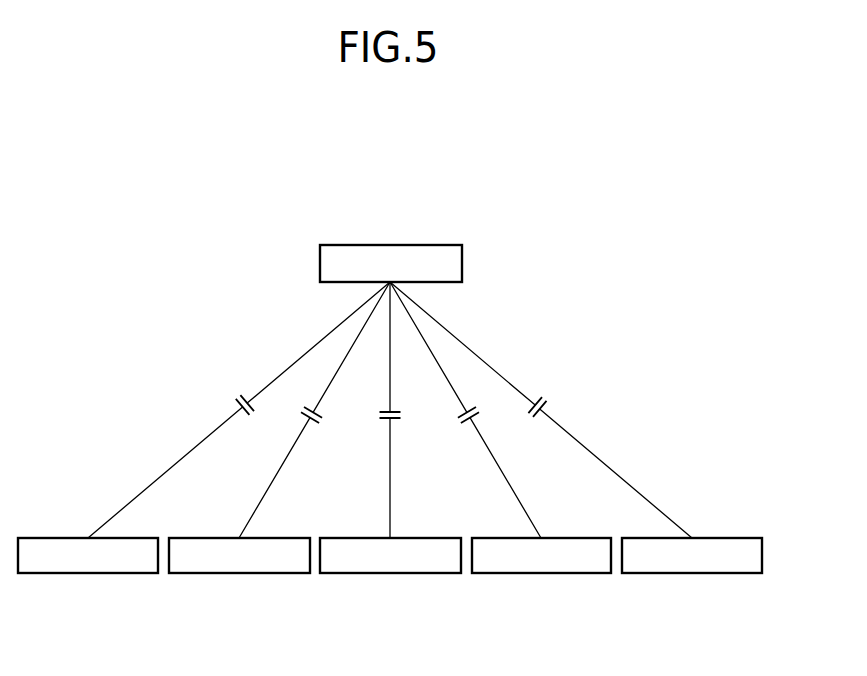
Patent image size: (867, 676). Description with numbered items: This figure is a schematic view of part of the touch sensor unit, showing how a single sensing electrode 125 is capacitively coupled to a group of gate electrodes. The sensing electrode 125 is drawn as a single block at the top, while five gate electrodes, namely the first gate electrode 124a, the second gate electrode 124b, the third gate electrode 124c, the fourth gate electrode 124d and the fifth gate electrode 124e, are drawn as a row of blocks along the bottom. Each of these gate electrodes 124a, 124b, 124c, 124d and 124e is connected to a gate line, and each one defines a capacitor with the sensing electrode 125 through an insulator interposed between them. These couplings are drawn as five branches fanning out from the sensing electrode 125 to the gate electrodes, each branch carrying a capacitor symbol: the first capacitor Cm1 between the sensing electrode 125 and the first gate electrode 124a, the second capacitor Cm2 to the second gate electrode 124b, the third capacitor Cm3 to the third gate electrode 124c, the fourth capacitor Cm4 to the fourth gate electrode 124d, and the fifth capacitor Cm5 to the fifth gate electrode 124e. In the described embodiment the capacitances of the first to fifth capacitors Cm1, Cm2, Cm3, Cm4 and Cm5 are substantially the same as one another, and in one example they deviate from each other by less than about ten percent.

The sensing electrode 125 is at (462, 262).
The first gate electrode 124a is at (88, 573).
The second gate electrode 124b is at (239, 573).
The third gate electrode 124c is at (390, 573).
The fourth gate electrode 124d is at (541, 573).
The fifth gate electrode 124e is at (690, 573).
The first capacitor Cm1 is at (239, 410).
The second capacitor Cm2 is at (314, 410).
The third capacitor Cm3 is at (412, 410).
The fourth capacitor Cm4 is at (465, 410).
The fifth capacitor Cm5 is at (541, 410).